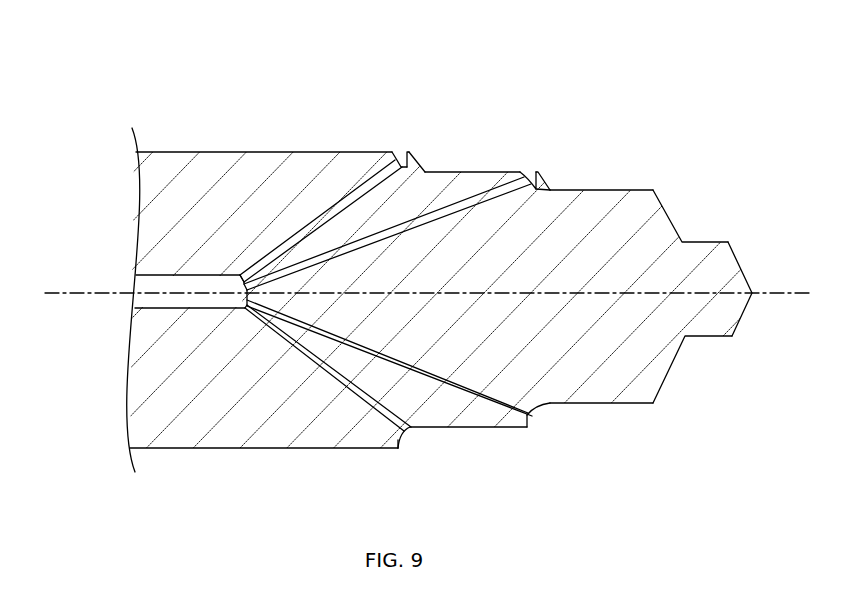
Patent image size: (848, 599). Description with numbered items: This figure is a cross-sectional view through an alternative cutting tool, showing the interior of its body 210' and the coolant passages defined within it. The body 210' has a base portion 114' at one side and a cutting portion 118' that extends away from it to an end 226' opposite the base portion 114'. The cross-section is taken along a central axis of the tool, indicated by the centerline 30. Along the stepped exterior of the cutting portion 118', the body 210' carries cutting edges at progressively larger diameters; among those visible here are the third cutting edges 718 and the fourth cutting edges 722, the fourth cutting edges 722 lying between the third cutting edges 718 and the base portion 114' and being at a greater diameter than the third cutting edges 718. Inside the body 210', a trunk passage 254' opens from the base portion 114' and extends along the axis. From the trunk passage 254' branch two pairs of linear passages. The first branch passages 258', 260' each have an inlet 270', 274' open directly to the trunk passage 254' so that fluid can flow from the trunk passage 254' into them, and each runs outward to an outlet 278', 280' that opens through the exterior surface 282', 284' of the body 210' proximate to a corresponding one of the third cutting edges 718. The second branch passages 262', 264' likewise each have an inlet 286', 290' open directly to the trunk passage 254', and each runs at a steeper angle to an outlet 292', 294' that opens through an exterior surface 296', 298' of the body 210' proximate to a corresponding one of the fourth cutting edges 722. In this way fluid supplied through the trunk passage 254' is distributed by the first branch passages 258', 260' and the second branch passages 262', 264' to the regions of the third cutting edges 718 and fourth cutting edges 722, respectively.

The nozzle 30 is at (78, 290).
The base portion 114' is at (424, 316).
The cutting portion 118' is at (691, 296).
The end 226' is at (766, 270).
The body 210' is at (264, 485).
The trunk passage 254' is at (150, 230).
The inlet 274' is at (140, 338).
The inlet 270' is at (155, 202).
The inlet 286' is at (201, 185).
The inlet 290' is at (147, 372).
The second branch passage 262' is at (315, 183).
The first branch passage 258' is at (400, 160).
The first branch passage 260' is at (389, 396).
The second branch passage 264' is at (328, 410).
The exterior surface 296' is at (370, 111).
The outlet 292' is at (415, 100).
The fourth cutting edges 722 is at (422, 160).
The outlet 278' is at (549, 133).
The third cutting edges 718 is at (548, 173).
The exterior surface 282' is at (623, 158).
The outlet 280' is at (591, 430).
The exterior surface 284' is at (568, 455).
The outlet 294' is at (430, 469).
The exterior surface 298' is at (368, 474).